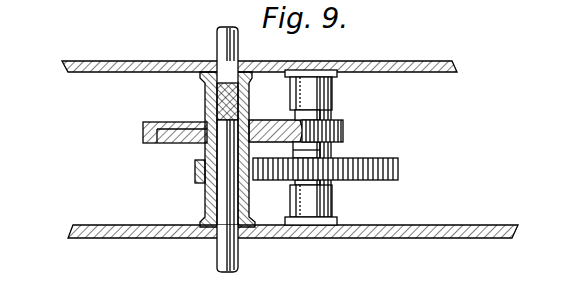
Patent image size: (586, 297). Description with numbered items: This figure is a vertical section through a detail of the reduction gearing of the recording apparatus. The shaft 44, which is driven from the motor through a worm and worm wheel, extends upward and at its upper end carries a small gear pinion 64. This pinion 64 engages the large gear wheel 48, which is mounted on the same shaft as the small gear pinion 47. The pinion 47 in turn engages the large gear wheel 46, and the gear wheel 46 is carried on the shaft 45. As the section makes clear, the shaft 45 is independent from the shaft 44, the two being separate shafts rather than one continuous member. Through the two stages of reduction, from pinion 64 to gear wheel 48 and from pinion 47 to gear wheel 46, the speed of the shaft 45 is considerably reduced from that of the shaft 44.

The shaft 44 is at (222, 253).
The shaft 45 is at (222, 43).
The large gear wheel 46 is at (143, 132).
The small gear pinion 47 is at (342, 127).
The large gear wheel 48 is at (398, 178).
The small gear pinion 64 is at (195, 168).